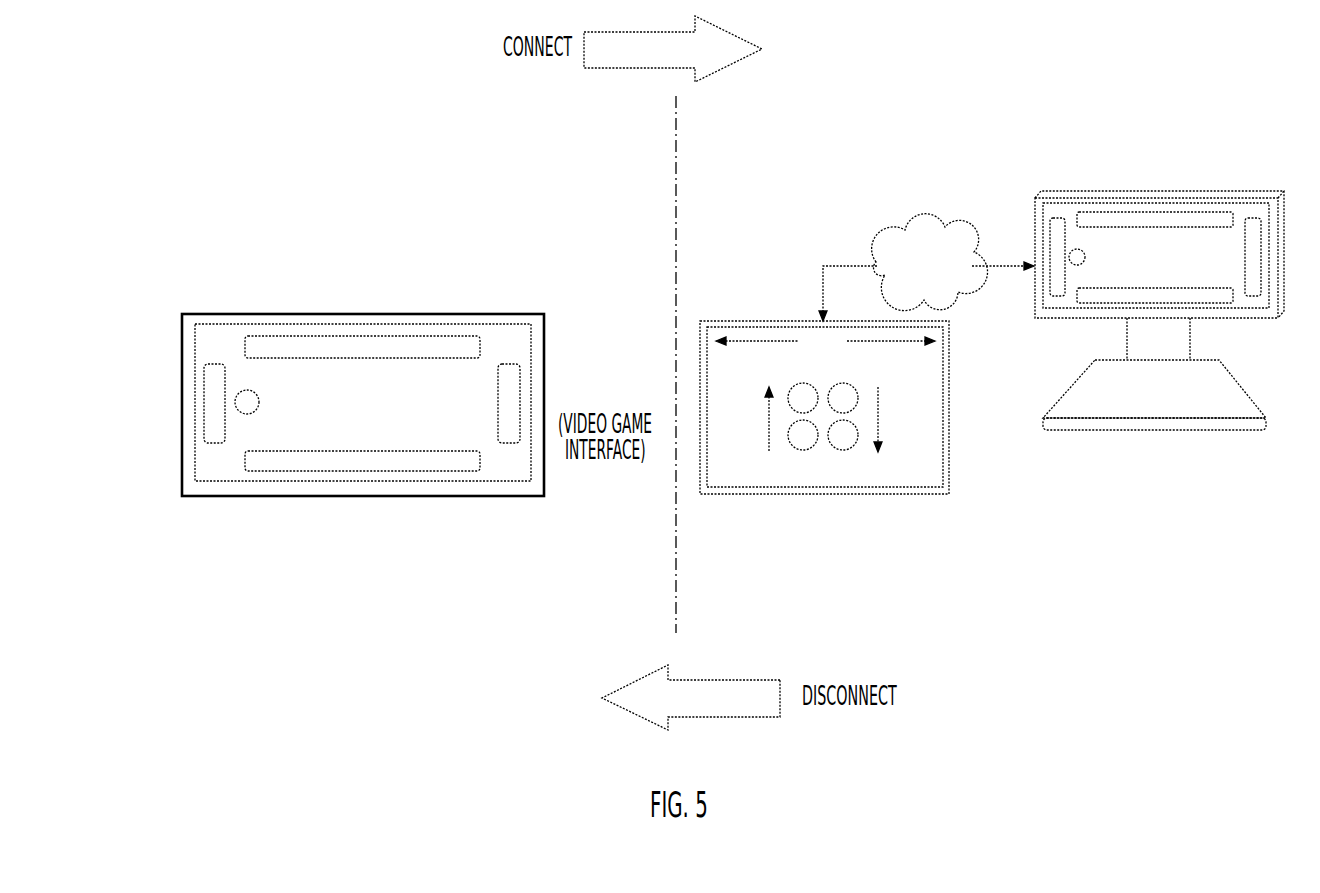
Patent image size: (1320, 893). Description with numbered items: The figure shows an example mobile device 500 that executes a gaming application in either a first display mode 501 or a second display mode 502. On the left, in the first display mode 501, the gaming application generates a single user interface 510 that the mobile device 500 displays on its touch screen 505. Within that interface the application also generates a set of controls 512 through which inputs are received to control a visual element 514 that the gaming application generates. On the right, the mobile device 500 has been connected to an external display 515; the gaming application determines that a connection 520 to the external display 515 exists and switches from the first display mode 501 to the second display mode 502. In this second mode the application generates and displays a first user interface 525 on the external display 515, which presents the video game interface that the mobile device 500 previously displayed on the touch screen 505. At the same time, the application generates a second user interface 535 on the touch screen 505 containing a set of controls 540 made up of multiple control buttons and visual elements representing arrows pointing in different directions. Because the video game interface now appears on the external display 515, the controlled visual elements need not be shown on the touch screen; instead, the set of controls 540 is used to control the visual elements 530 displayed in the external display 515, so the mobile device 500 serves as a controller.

The mobile device 500 is at (567, 402).
The first display mode 501 is at (470, 138).
The second display mode 502 is at (1003, 138).
The touch screen 505 is at (333, 481).
The single user interface 510 is at (500, 338).
The set of controls 512 is at (402, 345).
The visual element 514 is at (232, 338).
The external display 515 is at (1163, 432).
The connection 520 is at (893, 228).
The first user interface 525 is at (1139, 247).
The visual elements 530 is at (1052, 276).
The second user interface 535 is at (948, 408).
The set of controls 540 is at (912, 432).